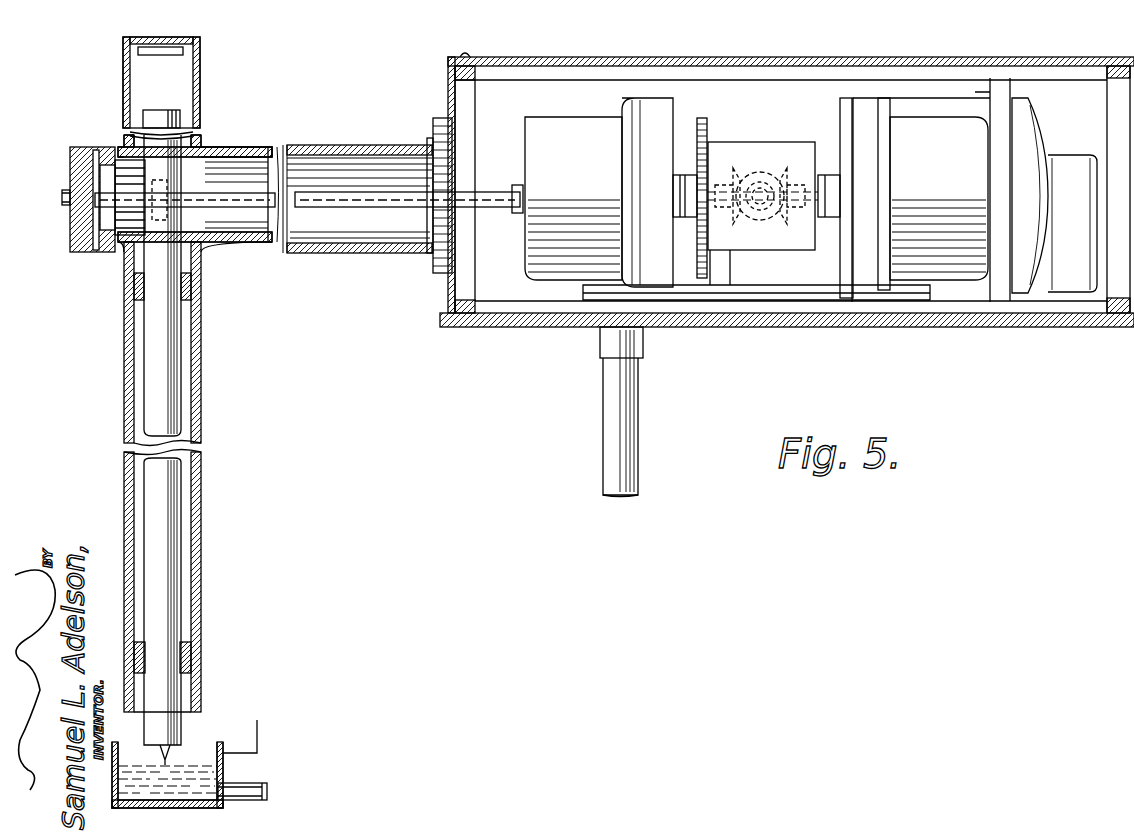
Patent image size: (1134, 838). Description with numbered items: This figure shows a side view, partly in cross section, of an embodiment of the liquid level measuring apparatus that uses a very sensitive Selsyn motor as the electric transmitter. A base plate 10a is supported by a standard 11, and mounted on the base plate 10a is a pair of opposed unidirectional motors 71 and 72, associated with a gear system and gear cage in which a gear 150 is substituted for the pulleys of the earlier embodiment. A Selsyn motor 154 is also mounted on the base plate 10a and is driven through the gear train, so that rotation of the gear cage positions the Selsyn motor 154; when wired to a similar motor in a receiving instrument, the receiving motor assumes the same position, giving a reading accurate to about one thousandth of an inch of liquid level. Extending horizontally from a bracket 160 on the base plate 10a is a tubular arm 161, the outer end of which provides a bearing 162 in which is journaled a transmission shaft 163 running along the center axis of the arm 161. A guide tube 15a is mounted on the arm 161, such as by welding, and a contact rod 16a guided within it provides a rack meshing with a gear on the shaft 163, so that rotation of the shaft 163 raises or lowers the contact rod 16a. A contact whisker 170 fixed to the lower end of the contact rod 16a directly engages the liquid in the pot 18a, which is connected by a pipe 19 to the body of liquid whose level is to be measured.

The bearing 162 is at (97, 218).
The contact rod 16a is at (180, 398).
The guide tube 15a is at (201, 510).
The contact whisker 170 is at (172, 758).
The pot 18a is at (223, 757).
The pipe 19 is at (250, 790).
The tubular arm 161 is at (350, 145).
The transmission shaft 163 is at (353, 207).
The bracket 160 is at (428, 270).
The unidirectional motor 71 is at (548, 280).
The gear 150 is at (703, 278).
The base plate 10a is at (845, 327).
The standard 11 is at (633, 440).
The unidirectional motor 72 is at (962, 280).
The Selsyn motor 154 is at (1035, 140).